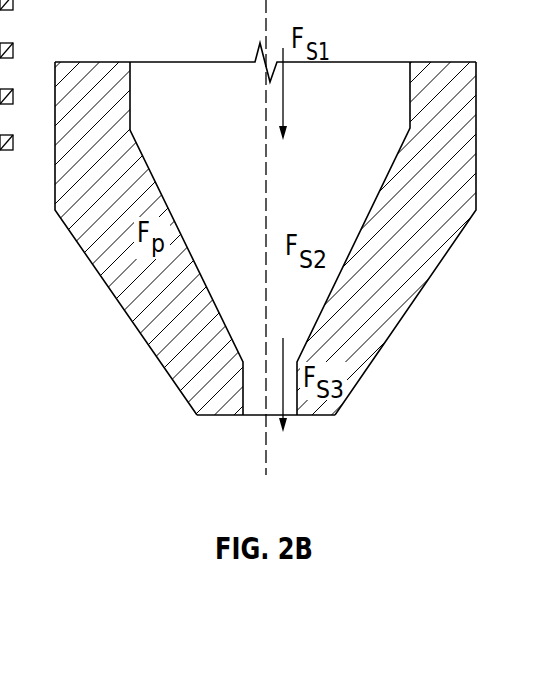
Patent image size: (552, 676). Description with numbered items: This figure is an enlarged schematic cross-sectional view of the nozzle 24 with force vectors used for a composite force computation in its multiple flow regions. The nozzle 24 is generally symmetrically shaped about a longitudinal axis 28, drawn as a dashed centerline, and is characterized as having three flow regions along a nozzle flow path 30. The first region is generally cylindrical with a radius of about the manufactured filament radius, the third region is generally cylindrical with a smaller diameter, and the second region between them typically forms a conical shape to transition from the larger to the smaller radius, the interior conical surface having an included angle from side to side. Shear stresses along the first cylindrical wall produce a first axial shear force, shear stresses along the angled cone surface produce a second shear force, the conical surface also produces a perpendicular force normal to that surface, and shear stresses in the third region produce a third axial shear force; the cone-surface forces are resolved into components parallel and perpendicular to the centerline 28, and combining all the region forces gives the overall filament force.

The nozzle 24 is at (442, 130).
The nozzle flow path 30 is at (210, 72).
The longitudinal axis 28 is at (265, 430).